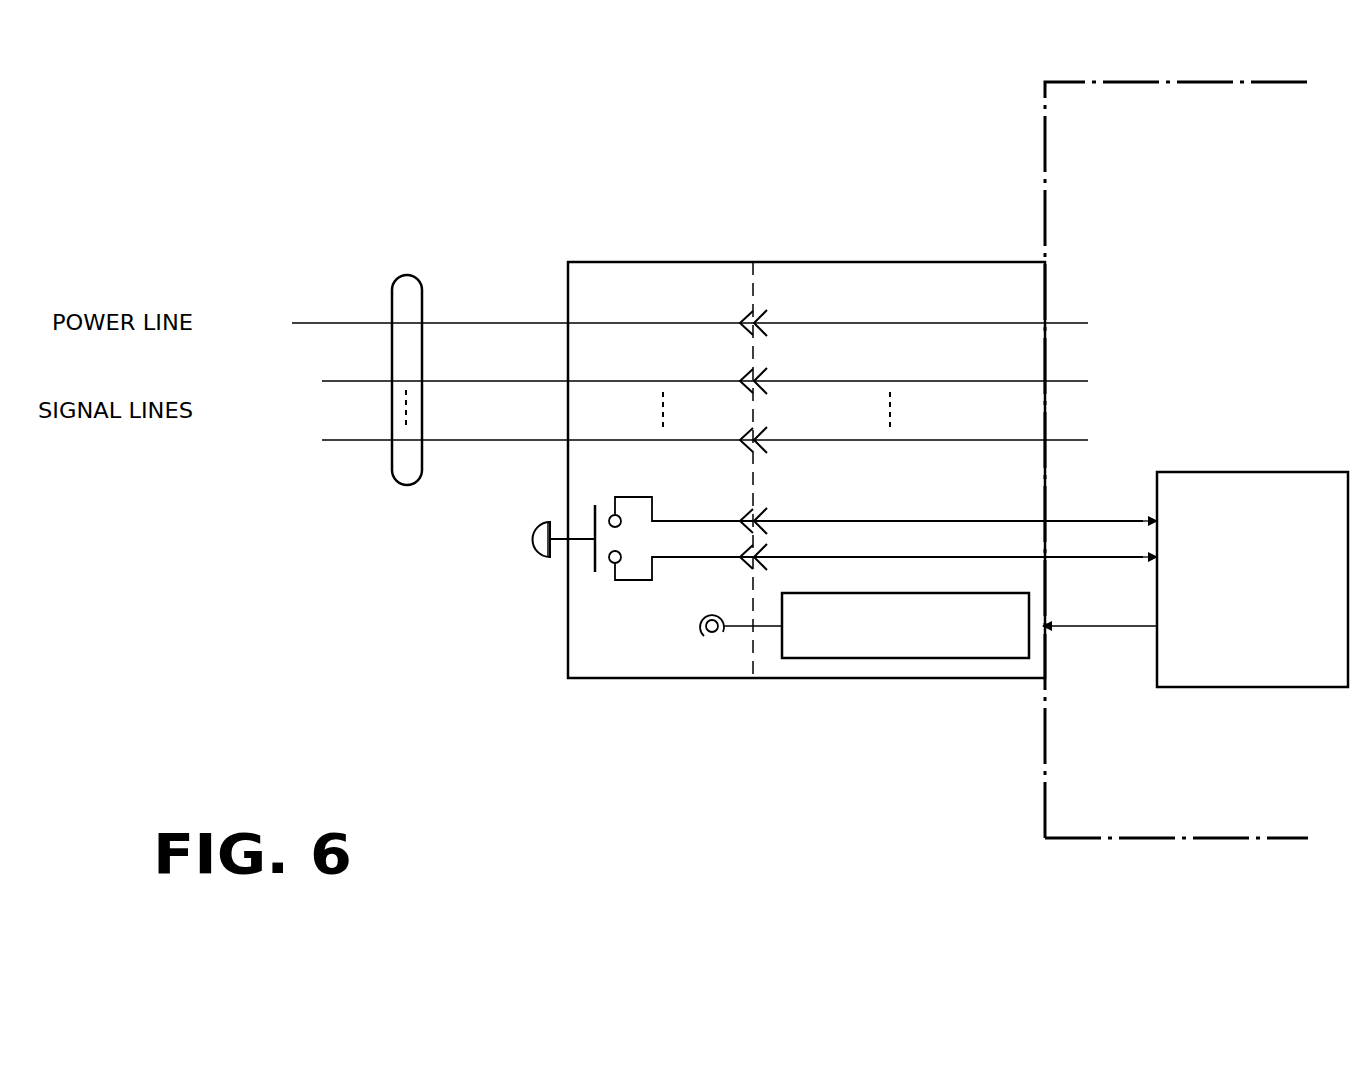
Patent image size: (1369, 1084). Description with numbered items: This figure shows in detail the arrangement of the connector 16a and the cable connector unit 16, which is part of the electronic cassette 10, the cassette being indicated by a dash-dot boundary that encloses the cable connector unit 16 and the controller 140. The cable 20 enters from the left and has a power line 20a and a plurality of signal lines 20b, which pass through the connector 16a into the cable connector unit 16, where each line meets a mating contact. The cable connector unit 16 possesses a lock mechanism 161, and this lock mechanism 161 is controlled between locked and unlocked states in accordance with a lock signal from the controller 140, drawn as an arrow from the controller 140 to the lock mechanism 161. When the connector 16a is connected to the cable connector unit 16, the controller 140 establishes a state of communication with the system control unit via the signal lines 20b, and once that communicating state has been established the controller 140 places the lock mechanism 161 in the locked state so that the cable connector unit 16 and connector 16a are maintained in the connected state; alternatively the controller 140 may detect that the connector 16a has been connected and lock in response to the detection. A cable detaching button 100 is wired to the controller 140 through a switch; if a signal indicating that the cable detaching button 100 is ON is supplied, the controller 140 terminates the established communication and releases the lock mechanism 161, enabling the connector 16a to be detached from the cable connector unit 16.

The electronic cassette 10 is at (1196, 838).
The cable connector unit 16 is at (862, 522).
The connector 16a is at (632, 678).
The lock mechanism 161 is at (828, 658).
The controller 140 is at (1257, 472).
The cable 20 is at (660, 343).
The power line 20a is at (312, 318).
The signal lines 20b is at (315, 365).
The cable detaching button 100 is at (532, 539).